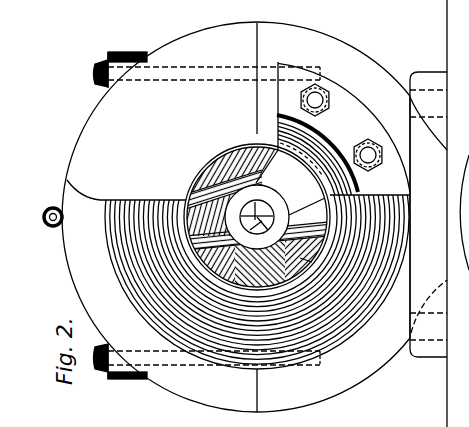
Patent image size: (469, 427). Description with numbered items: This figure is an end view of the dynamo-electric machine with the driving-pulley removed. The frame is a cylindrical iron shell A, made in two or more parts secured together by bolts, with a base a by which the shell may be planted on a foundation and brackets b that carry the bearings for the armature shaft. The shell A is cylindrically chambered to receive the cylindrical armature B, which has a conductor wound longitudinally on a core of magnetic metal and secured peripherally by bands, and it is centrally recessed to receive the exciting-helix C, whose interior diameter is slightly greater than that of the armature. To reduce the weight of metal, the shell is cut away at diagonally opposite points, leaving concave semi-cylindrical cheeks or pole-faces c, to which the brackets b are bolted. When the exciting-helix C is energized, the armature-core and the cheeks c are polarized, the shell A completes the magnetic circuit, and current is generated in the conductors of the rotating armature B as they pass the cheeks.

The cylindrical shell A is at (227, 217).
The base a is at (438, 213).
The armature B is at (257, 220).
The brackets b is at (270, 272).
The cheeks or pole-faces c is at (268, 178).
The exciting-helix C is at (257, 217).